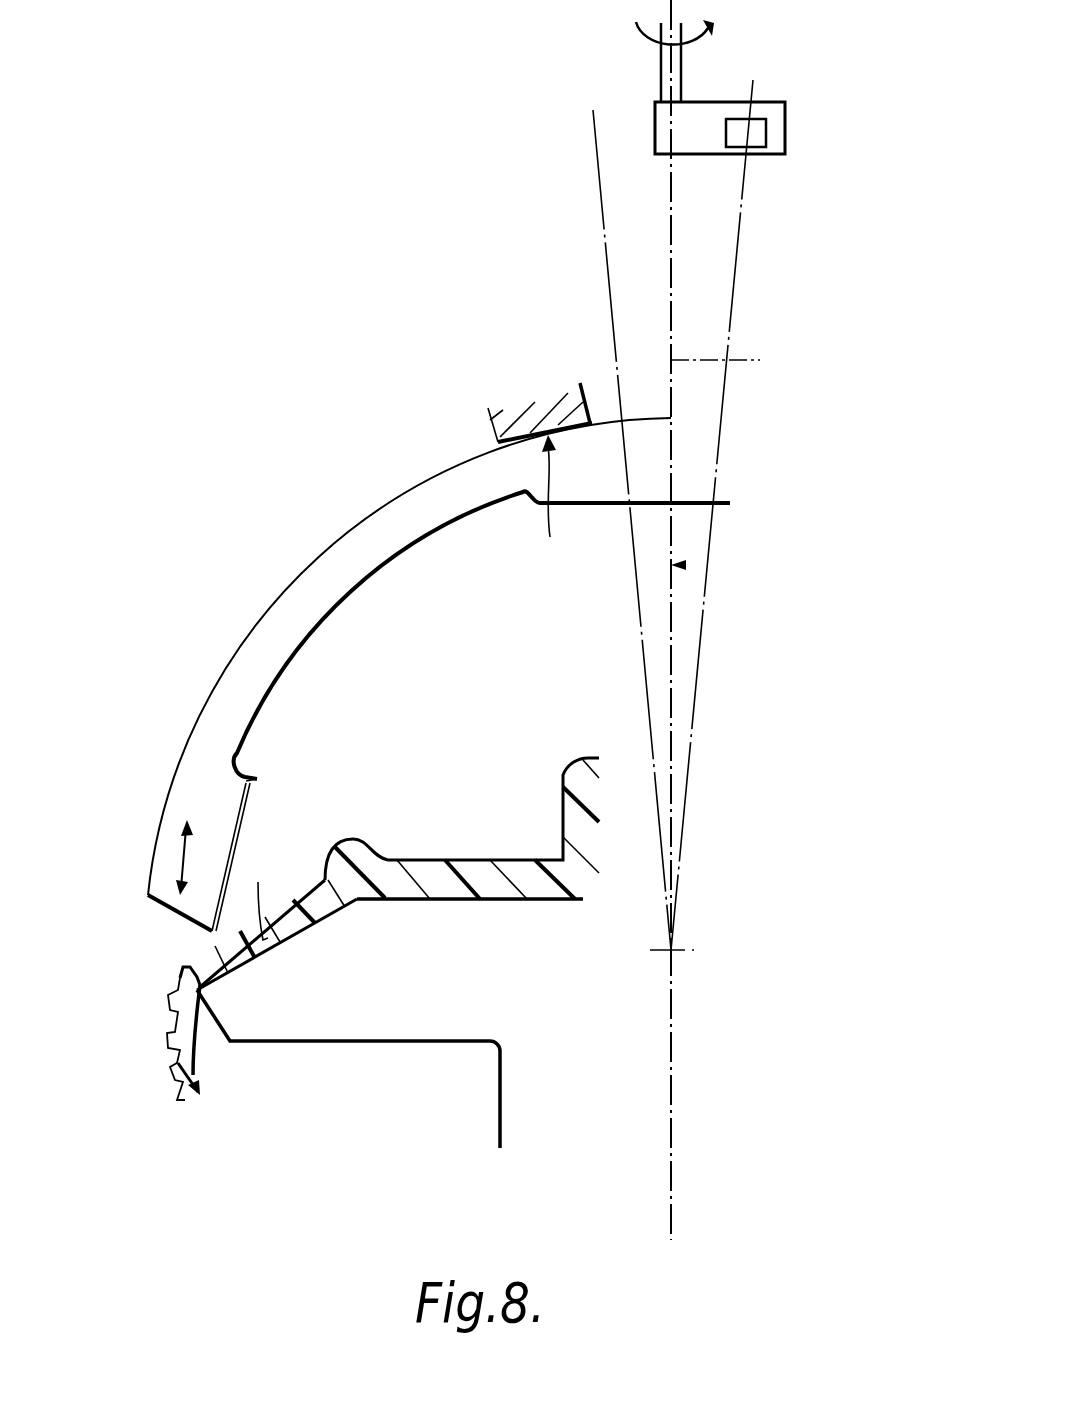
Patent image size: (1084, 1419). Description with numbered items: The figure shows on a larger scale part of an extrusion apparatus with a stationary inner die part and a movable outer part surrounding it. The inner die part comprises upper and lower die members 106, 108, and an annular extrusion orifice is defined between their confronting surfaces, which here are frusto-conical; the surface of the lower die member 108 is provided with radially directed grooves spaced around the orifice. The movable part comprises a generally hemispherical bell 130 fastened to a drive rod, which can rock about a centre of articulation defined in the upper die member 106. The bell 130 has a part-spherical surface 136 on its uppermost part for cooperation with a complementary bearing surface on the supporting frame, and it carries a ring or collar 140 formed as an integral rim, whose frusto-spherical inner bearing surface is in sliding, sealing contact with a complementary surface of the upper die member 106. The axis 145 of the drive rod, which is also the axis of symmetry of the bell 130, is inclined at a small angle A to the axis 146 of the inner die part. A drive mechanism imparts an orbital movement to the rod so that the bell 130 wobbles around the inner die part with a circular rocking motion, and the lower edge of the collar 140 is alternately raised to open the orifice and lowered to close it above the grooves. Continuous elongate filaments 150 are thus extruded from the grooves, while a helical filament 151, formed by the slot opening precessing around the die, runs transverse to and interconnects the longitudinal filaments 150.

The upper die member 106 is at (436, 716).
The lower die member 108 is at (417, 1017).
The bell 130 is at (240, 683).
The part-spherical surface 136 is at (549, 506).
The ring or collar 140 is at (517, 420).
The axis of the drive rod 145 is at (735, 288).
The axis of the inner die part 146 is at (760, 360).
The continuous elongate filaments 150 is at (200, 1084).
The helical filament 151 is at (168, 1033).
The angle A is at (680, 565).